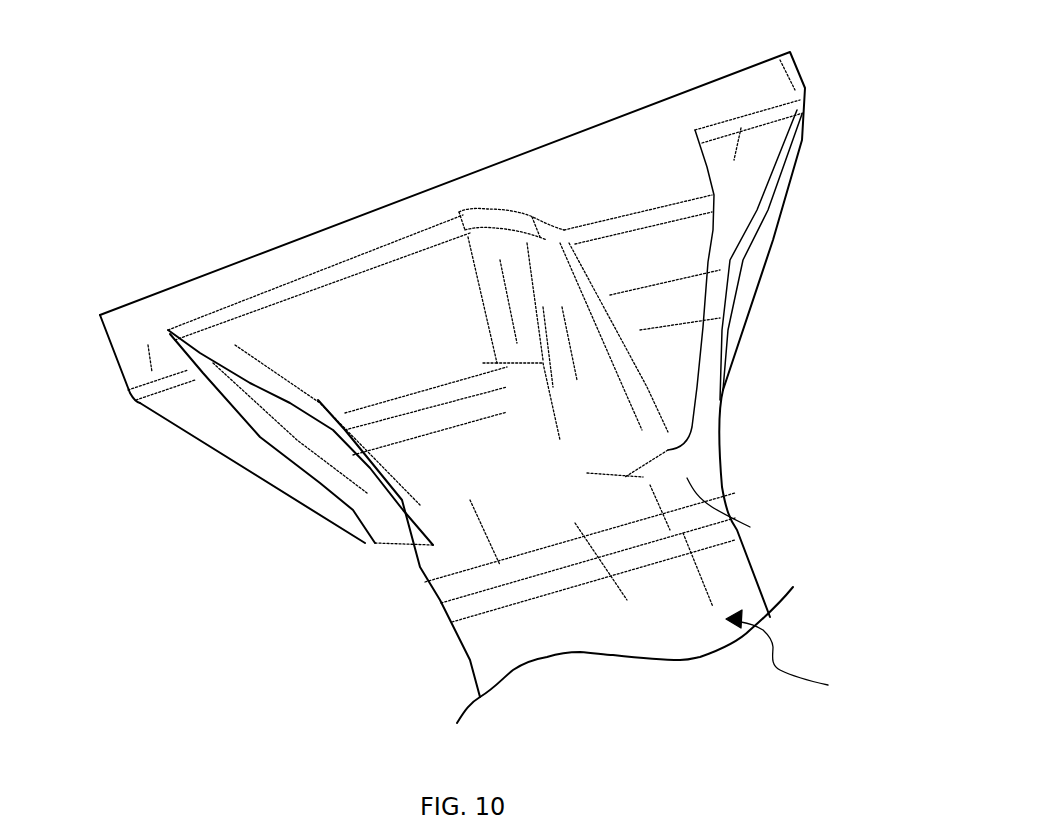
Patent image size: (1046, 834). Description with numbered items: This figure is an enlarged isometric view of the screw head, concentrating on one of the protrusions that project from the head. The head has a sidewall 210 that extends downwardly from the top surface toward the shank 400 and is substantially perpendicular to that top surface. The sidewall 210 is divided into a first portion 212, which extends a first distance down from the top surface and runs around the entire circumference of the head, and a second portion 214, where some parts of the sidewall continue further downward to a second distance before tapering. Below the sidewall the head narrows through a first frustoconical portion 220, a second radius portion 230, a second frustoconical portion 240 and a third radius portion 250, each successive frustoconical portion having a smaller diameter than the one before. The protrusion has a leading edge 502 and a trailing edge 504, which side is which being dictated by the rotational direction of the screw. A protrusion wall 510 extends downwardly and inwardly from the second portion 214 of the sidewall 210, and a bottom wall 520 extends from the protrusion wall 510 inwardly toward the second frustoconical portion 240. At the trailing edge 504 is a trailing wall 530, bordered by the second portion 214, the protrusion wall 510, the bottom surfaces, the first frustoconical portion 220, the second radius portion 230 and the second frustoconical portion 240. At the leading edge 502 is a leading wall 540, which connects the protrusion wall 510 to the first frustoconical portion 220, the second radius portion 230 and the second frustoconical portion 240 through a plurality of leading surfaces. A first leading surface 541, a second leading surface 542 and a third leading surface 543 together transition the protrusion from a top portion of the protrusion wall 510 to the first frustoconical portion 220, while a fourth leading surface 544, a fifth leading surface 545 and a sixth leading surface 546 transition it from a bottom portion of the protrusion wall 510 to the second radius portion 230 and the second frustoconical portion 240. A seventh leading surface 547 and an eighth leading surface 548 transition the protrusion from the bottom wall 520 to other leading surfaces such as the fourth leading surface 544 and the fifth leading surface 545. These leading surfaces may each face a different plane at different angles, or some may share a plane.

The sidewall 210 is at (790, 72).
The first portion 212 is at (213, 287).
The second portion 214 is at (157, 365).
The first frustoconical portion 220 is at (195, 380).
The second radius portion 230 is at (370, 435).
The second frustoconical portion 240 is at (740, 537).
The third radius portion 250 is at (503, 600).
The shank 400 is at (801, 654).
The leading edge 502 is at (583, 295).
The trailing edge 504 is at (257, 432).
The protrusion wall 510 is at (638, 250).
The bottom wall 520 is at (642, 500).
The trailing wall 530 is at (297, 452).
The leading wall 540 is at (583, 357).
The first leading surface 541 is at (610, 333).
The second leading surface 542 is at (552, 260).
The third leading surface 543 is at (490, 273).
The fourth leading surface 544 is at (645, 432).
The fifth leading surface 545 is at (660, 460).
The sixth leading surface 546 is at (513, 380).
The seventh leading surface 547 is at (690, 437).
The eighth leading surface 548 is at (690, 458).